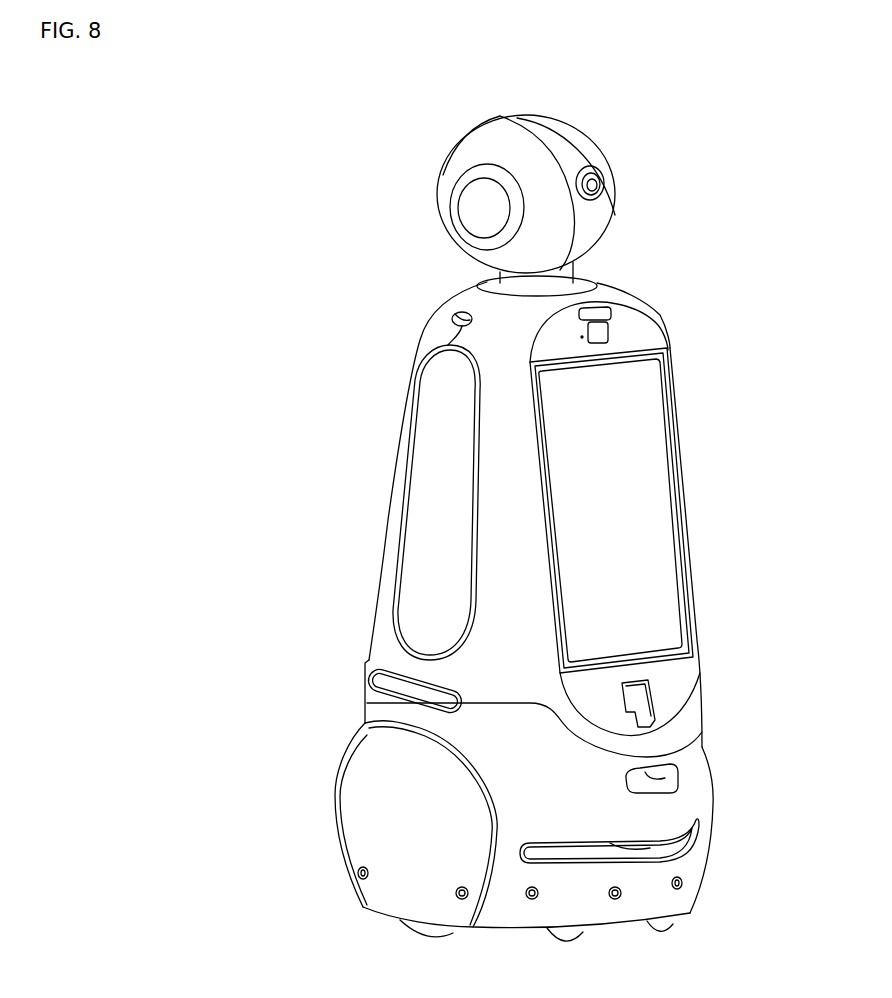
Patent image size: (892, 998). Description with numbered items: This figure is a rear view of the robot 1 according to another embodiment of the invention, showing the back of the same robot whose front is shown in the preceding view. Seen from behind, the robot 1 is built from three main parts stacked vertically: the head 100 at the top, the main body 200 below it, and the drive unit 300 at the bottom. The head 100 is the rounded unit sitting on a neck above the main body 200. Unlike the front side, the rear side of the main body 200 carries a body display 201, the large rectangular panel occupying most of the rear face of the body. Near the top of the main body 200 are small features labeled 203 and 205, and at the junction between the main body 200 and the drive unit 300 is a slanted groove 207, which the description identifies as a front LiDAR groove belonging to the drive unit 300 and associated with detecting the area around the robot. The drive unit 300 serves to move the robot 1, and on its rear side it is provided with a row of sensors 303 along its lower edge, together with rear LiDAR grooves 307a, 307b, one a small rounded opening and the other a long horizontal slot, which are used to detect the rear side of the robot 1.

The robot 1 is at (366, 111).
The head 100 is at (612, 122).
The main body 200 is at (672, 300).
The body display 201 is at (654, 493).
The camera 203 is at (610, 333).
The button 205 is at (455, 316).
The front LiDAR groove 207 is at (382, 700).
The drive unit 300 is at (722, 740).
The sensors 303 is at (364, 880).
The rear LiDAR groove 307a is at (665, 797).
The rear LiDAR groove 307b is at (672, 852).